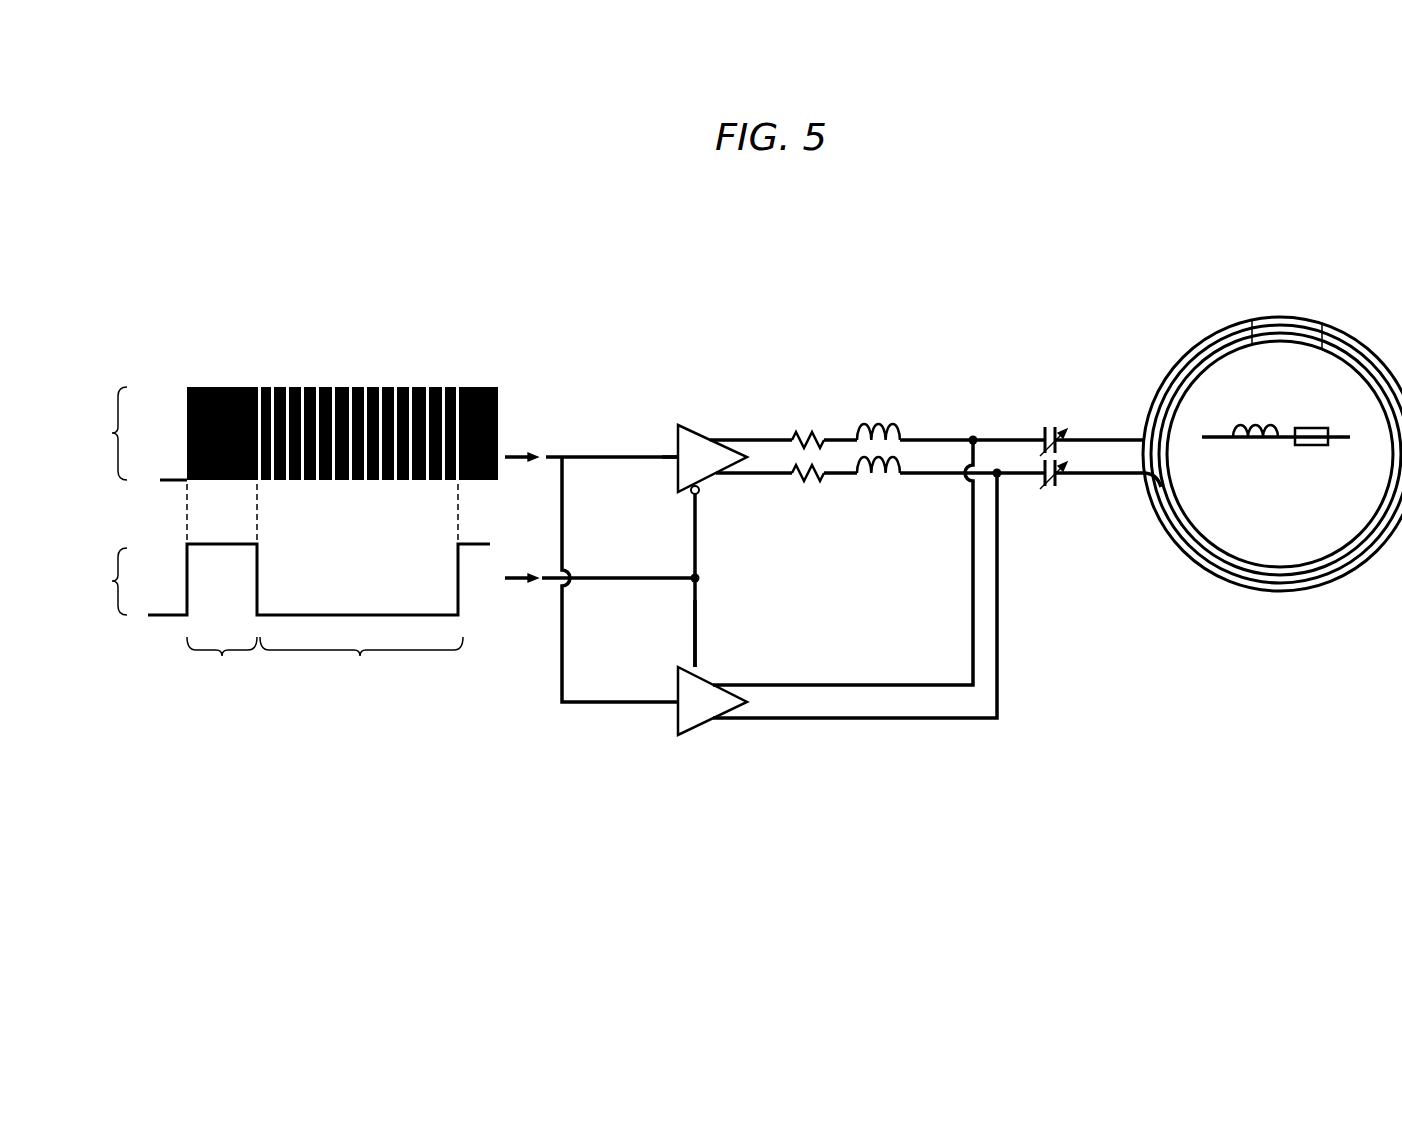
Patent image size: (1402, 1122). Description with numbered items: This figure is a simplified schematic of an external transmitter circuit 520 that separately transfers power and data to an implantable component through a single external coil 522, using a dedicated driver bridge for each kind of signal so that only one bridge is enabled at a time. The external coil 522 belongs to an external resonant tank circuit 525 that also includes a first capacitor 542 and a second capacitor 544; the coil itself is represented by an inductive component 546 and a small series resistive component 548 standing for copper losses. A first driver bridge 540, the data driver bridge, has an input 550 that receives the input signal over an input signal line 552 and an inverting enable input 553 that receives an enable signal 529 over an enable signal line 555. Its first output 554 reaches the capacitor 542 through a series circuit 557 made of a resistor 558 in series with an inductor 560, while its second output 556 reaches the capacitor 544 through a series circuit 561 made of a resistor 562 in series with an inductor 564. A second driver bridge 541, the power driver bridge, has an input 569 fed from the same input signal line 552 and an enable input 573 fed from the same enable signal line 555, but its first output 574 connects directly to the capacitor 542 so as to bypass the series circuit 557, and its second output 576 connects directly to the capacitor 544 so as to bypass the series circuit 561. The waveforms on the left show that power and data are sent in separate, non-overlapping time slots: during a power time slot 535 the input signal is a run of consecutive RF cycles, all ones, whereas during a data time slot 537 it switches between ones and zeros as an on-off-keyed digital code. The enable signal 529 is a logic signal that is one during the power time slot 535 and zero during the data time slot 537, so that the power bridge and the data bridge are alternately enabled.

The external transmitter circuit 520 is at (838, 218).
The external resonant tank circuit 525 is at (1150, 296).
The data time slot 537 is at (374, 523).
The power time slot 535 is at (238, 523).
The enable signal 529 is at (371, 600).
The first driver bridge 540 is at (692, 424).
The input 550 is at (677, 443).
The input signal line 552 is at (603, 460).
The enable input 553 is at (690, 494).
The first output 554 is at (713, 437).
The enable signal line 555 is at (698, 530).
The second output 556 is at (716, 476).
The series circuit 557 is at (913, 362).
The resistor 558 is at (812, 432).
The inductor 560 is at (860, 424).
The series circuit 561 is at (862, 562).
The resistor 562 is at (812, 484).
The inductor 564 is at (888, 482).
The capacitor 542 is at (1054, 425).
The capacitor 544 is at (1055, 490).
The external coil 522 is at (1271, 594).
The inductive component 546 is at (1252, 442).
The series resistive component 548 is at (1308, 445).
The second driver bridge 541 is at (700, 730).
The input 569 is at (674, 702).
The enable input 573 is at (700, 666).
The first output 574 is at (715, 683).
The second output 576 is at (716, 720).